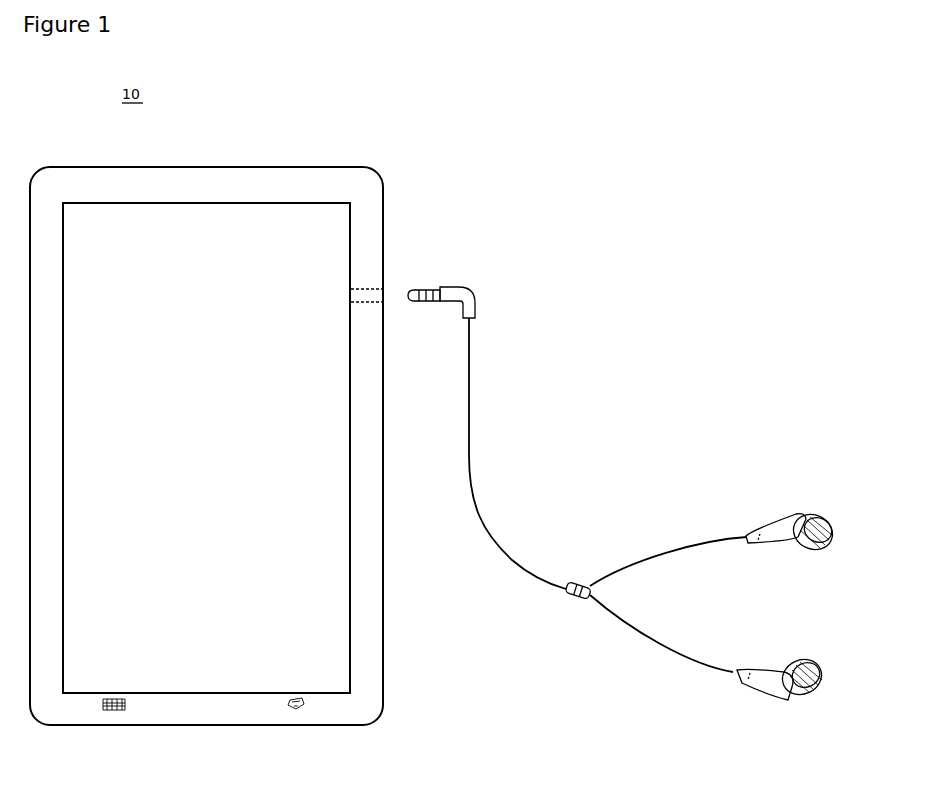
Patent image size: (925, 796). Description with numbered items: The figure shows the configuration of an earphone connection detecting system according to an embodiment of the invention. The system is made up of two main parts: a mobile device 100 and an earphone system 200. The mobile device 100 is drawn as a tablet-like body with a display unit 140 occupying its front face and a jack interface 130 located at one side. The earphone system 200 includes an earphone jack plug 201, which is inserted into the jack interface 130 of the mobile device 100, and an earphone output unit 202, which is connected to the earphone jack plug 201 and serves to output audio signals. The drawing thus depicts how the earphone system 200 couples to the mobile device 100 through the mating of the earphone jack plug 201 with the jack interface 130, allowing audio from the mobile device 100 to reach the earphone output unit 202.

The mobile device 100 is at (278, 147).
The jack interface 130 is at (394, 288).
The display unit 140 is at (298, 626).
The earphone system 200 is at (481, 356).
The earphone jack plug 201 is at (440, 315).
The earphone output unit 202 is at (592, 566).